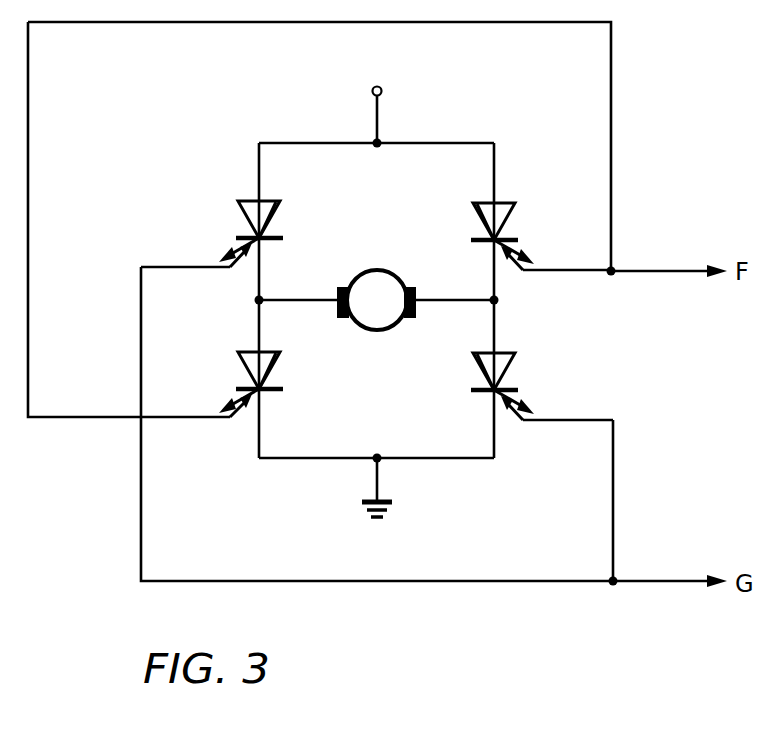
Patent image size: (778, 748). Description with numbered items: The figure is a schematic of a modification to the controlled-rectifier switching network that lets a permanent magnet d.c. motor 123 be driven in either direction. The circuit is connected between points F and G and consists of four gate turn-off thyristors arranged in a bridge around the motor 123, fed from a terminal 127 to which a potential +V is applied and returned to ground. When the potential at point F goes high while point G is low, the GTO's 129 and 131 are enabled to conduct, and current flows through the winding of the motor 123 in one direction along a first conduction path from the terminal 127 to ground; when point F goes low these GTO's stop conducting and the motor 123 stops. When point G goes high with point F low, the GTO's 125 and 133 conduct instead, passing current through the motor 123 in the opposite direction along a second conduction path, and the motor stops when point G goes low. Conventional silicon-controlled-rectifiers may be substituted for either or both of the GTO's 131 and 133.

The permanent magnet d.c. motor 123 is at (383, 331).
The GTO 125 is at (277, 215).
The terminal 127 is at (382, 91).
The GTO 129 is at (505, 213).
The GTO 131 is at (277, 366).
The GTO 133 is at (505, 365).